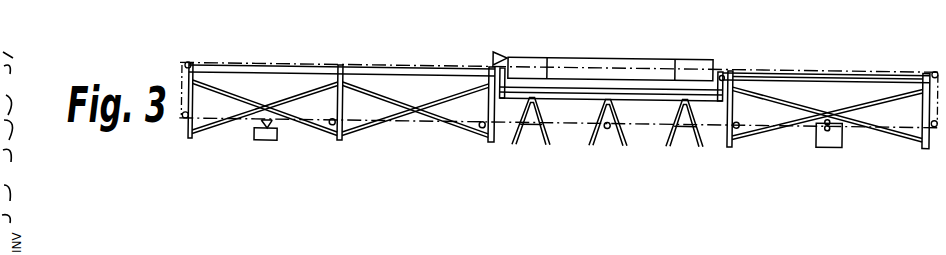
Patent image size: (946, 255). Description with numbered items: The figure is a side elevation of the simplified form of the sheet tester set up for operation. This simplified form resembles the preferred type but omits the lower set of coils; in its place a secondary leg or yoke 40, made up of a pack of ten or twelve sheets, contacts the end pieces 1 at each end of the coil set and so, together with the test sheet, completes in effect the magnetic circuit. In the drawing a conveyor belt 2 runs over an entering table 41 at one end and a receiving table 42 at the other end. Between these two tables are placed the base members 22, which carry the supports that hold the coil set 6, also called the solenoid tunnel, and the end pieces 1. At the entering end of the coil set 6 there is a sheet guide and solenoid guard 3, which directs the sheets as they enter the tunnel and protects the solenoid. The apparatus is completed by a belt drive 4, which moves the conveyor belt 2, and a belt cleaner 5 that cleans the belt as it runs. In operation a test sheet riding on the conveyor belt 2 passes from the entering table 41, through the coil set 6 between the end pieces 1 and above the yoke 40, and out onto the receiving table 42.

The end pieces 1 is at (727, 74).
The conveyor belt 2 is at (863, 70).
The sheet guide and solenoid guard 3 is at (502, 54).
The belt drive 4 is at (842, 141).
The belt cleaner 5 is at (259, 140).
The coil set 6 is at (560, 55).
The base members 22 is at (623, 136).
The yoke 40 is at (645, 98).
The entering table 41 is at (268, 67).
The receiving table 42 is at (788, 75).